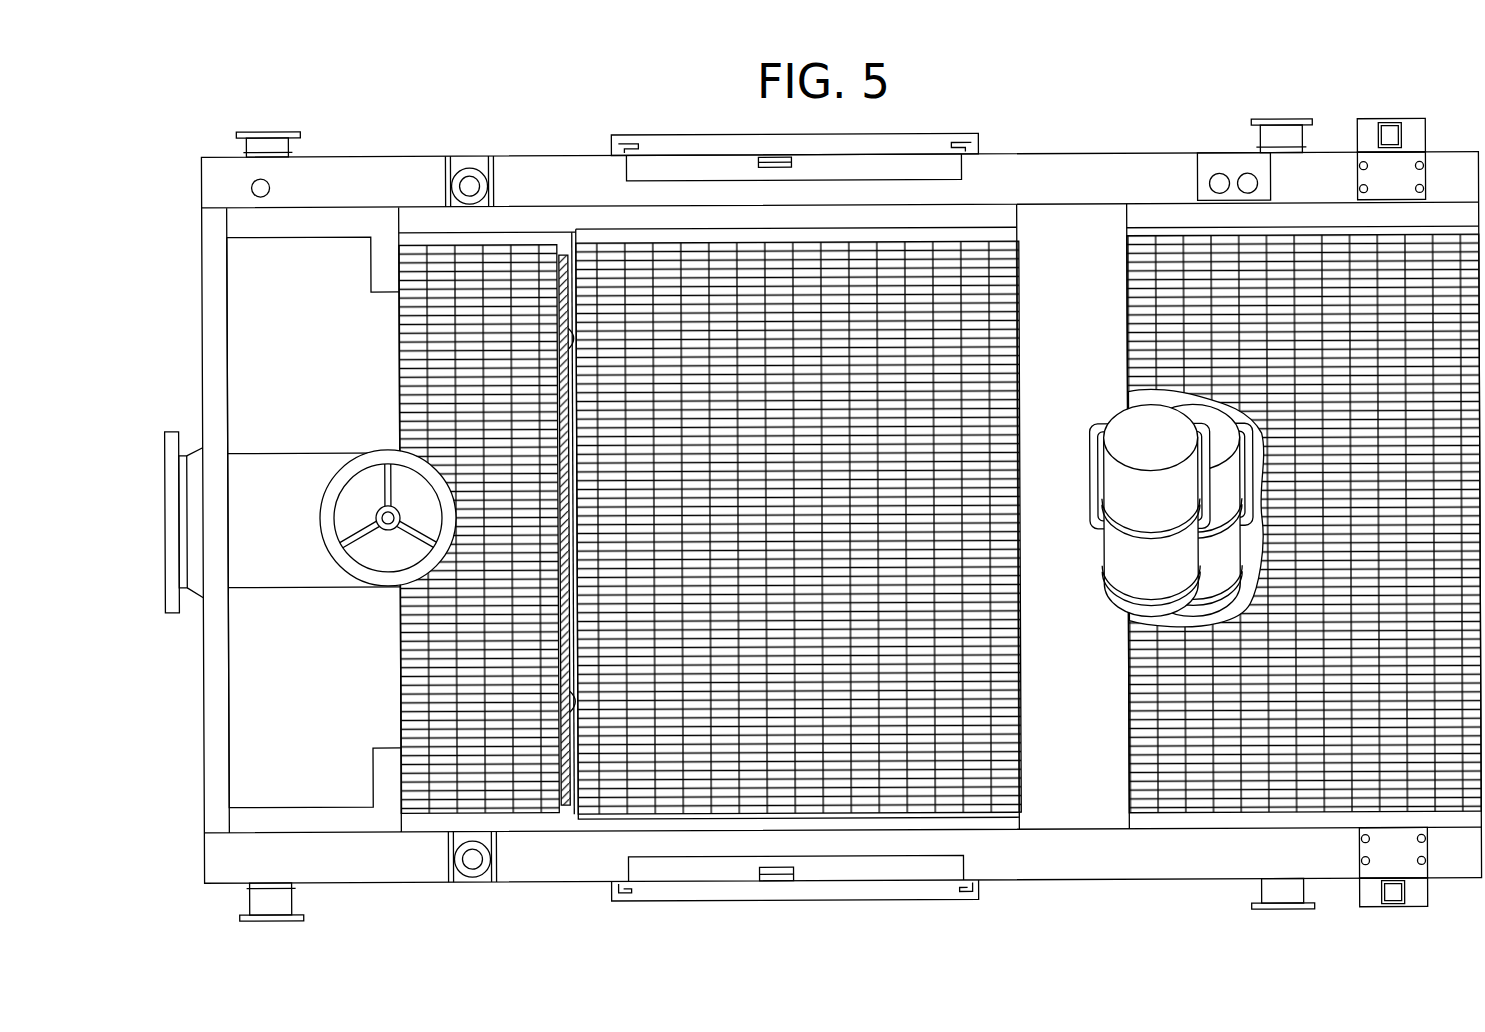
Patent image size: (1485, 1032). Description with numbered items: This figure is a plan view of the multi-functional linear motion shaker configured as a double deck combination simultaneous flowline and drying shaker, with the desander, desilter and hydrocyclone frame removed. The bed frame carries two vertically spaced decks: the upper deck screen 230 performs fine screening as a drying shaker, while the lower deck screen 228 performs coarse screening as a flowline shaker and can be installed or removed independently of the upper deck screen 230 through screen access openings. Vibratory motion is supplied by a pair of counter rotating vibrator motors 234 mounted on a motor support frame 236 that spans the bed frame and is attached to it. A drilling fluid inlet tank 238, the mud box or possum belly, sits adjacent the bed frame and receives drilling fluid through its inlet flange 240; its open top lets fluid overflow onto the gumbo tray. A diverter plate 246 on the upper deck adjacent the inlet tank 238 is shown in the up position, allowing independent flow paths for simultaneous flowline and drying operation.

The lower deck screen 228 is at (490, 263).
The upper deck screen 230 is at (1157, 265).
The counter rotating vibrator motors 234 is at (1118, 405).
The motor support frame 236 is at (1092, 810).
The drilling fluid inlet tank 238 is at (307, 235).
The inlet flange 240 is at (173, 428).
The diverter plate 246 is at (572, 804).